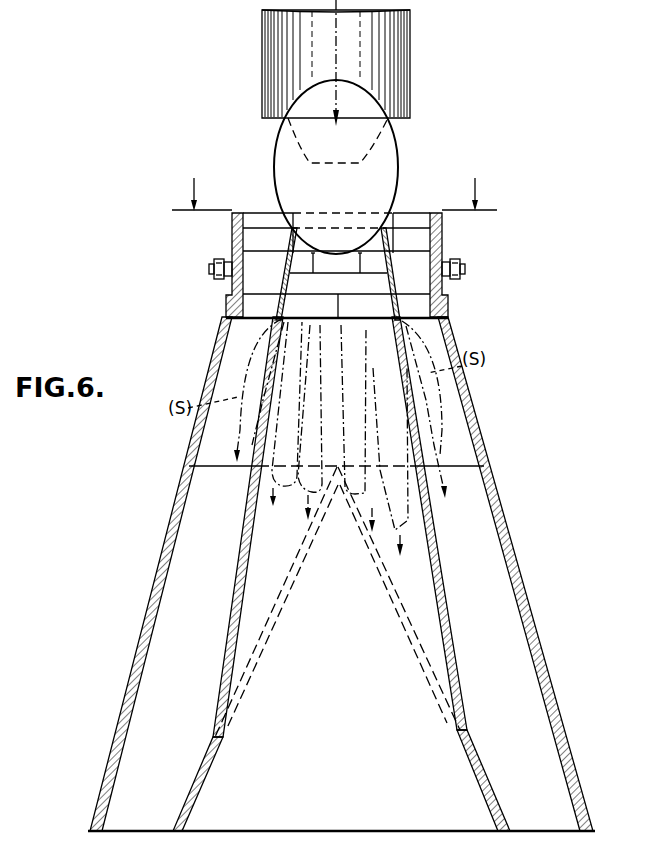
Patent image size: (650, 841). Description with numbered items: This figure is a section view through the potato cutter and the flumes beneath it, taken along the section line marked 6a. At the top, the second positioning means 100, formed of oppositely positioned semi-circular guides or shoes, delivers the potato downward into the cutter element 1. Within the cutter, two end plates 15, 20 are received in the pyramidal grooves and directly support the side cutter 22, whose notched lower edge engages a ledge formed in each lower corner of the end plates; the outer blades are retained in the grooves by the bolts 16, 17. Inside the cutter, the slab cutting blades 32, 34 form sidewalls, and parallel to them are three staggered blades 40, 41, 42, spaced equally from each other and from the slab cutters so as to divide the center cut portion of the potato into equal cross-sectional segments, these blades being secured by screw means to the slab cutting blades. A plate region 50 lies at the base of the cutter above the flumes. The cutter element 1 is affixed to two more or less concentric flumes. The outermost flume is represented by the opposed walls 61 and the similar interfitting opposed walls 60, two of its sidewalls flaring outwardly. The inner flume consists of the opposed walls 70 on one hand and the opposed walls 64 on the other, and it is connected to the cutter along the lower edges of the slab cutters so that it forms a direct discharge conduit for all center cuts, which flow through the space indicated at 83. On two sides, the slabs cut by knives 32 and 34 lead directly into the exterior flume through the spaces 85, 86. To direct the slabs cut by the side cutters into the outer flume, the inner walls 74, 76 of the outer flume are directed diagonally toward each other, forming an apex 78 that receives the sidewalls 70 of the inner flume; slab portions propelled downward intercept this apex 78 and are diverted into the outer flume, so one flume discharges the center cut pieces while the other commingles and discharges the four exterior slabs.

The second positioning means 100 is at (405, 100).
The section line 6a is at (335, 194).
The cutter element 1 is at (442, 238).
The end plate 15 is at (242, 213).
The end plate 20 is at (436, 213).
The side cutter 22 is at (398, 232).
The bolt 16 is at (466, 268).
The bolt 17 is at (209, 268).
The slab cutting blade 32 is at (288, 265).
The slab cutting blade 34 is at (396, 287).
The blade 40 is at (312, 259).
The blade 42 is at (361, 259).
The blade 41 is at (339, 306).
The distribution plate 50 is at (325, 293).
The opposed walls 60 is at (160, 628).
The opposed walls 61 is at (190, 468).
The opposed walls 64 is at (341, 588).
The opposed walls 70 is at (238, 585).
The inner wall 74 is at (460, 738).
The inner wall 76 is at (210, 766).
The apex 78 is at (337, 467).
The space 83 is at (374, 345).
The space 85 is at (459, 442).
The space 86 is at (250, 330).